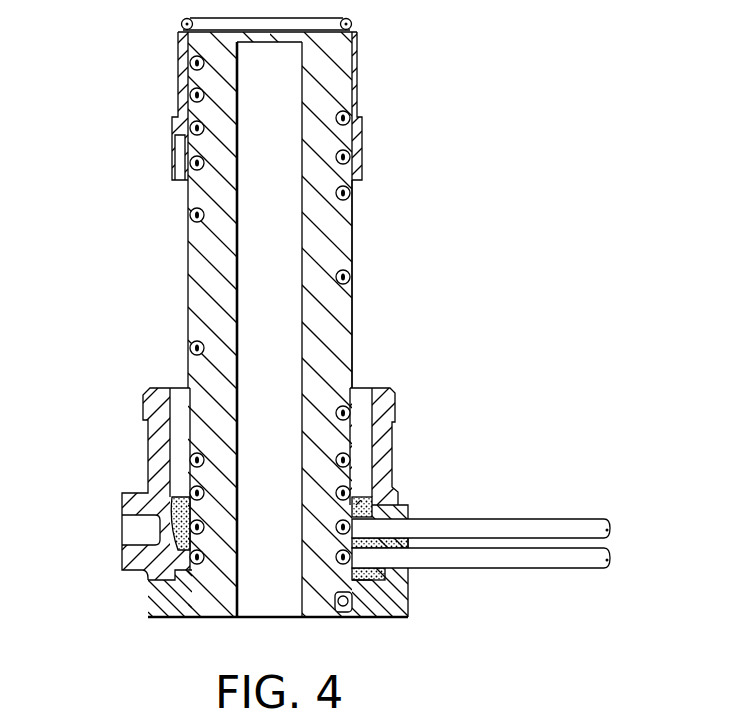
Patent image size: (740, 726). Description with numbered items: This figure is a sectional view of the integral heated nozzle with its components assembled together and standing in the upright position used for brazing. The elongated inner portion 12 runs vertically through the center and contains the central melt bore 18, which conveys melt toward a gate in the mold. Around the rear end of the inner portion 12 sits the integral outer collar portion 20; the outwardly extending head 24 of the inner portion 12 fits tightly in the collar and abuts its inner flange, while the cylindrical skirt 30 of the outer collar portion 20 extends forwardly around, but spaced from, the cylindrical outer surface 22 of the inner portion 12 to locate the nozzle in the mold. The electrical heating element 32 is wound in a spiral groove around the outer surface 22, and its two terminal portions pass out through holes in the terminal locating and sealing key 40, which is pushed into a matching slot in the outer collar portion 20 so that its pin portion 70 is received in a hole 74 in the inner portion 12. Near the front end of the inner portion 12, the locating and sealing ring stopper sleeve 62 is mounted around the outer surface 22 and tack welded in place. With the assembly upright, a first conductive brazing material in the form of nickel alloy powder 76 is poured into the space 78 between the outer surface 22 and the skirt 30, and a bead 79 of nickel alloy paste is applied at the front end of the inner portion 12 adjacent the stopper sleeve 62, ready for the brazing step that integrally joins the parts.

The elongated inner portion 12 is at (327, 250).
The central melt bore 18 is at (277, 224).
The outer collar portion 20 is at (145, 557).
The cylindrical outer surface 22 is at (351, 316).
The head 24 is at (153, 590).
The cylindrical skirt 30 is at (392, 410).
The electrical heating element 32 is at (342, 277).
The terminal locating and sealing key 40 is at (408, 596).
The locating and sealing ring stopper sleeve 62 is at (357, 68).
The pin portion 70 is at (354, 605).
The hole 74 is at (348, 605).
The nickel alloy powder 76 is at (176, 497).
The space 78 is at (362, 443).
The bead of nickel alloy paste 79 is at (352, 22).